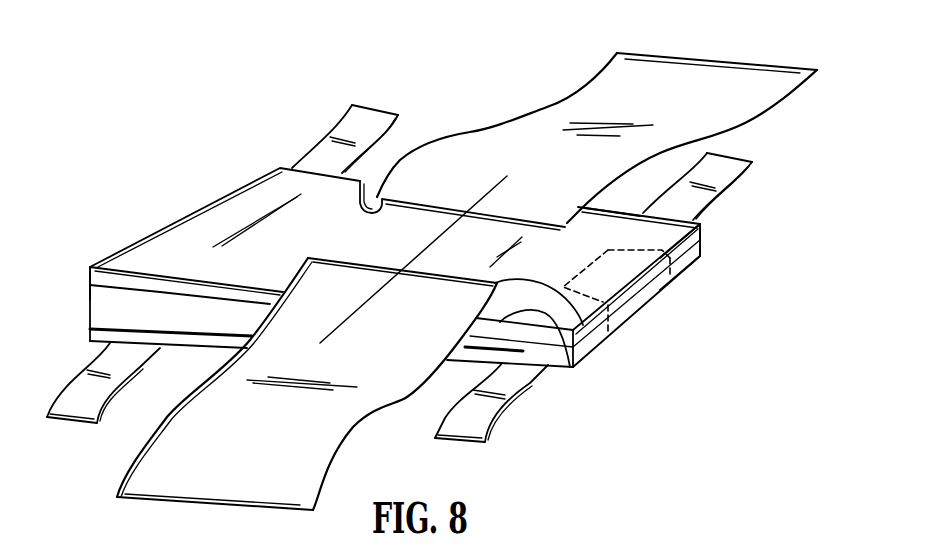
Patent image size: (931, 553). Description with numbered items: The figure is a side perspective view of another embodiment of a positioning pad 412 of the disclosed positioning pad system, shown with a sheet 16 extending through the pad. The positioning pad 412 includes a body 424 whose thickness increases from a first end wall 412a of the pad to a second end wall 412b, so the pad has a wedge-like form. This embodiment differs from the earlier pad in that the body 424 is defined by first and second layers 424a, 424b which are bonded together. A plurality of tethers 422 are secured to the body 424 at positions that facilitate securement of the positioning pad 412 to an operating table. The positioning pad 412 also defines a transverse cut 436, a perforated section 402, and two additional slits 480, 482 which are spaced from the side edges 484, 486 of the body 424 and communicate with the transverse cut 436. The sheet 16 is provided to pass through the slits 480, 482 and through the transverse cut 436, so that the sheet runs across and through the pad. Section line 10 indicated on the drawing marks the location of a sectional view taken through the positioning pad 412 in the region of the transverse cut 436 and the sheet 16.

The section view indicator / front flap 10 is at (450, 173).
The sheet 16 is at (688, 66).
The perforated section 402 is at (633, 283).
The positioning pad 412 is at (190, 222).
The first end wall 412a is at (692, 257).
The second end wall 412b is at (90, 290).
The tethers 422 is at (373, 118).
The body 424 is at (237, 190).
The first layer 424a is at (98, 310).
The second layer 424b is at (100, 279).
The transverse cut 436 is at (193, 337).
The slit 480 is at (372, 197).
The slit 482 is at (583, 320).
The side edge 484 is at (615, 212).
The side edge 486 is at (573, 367).